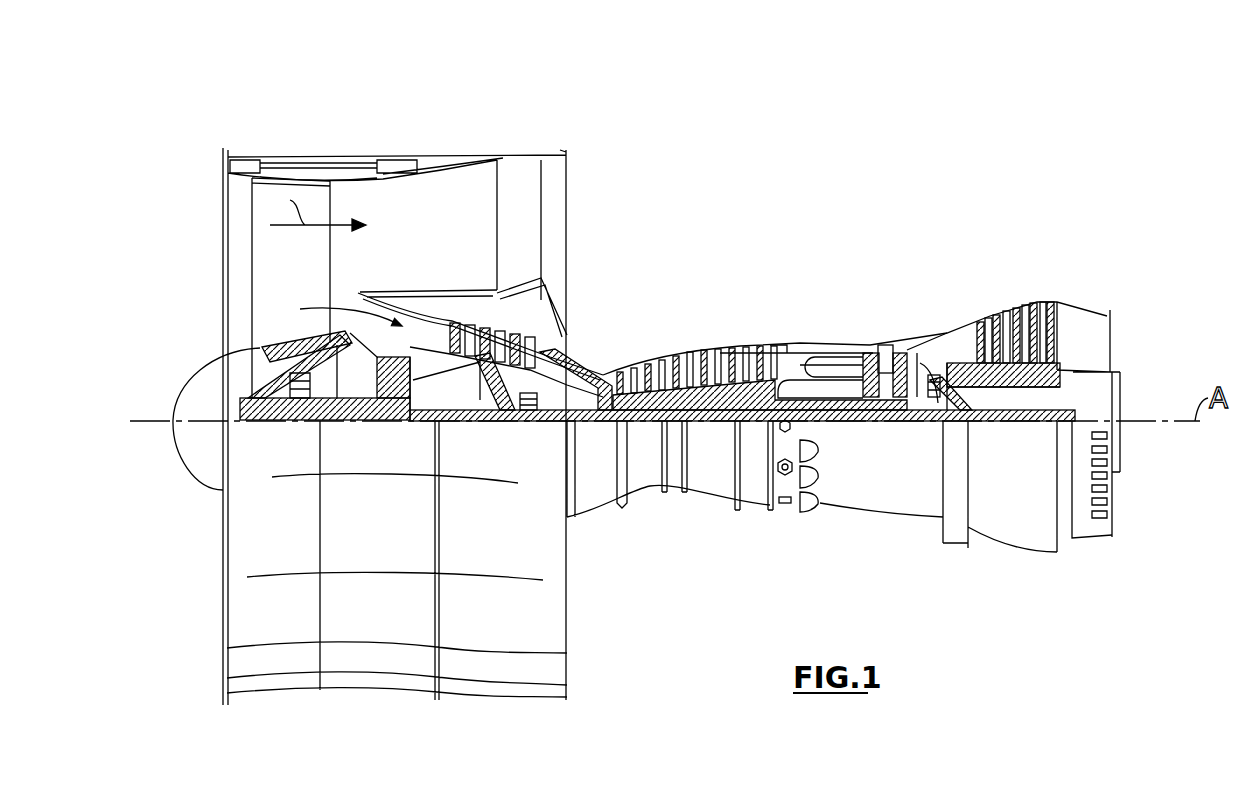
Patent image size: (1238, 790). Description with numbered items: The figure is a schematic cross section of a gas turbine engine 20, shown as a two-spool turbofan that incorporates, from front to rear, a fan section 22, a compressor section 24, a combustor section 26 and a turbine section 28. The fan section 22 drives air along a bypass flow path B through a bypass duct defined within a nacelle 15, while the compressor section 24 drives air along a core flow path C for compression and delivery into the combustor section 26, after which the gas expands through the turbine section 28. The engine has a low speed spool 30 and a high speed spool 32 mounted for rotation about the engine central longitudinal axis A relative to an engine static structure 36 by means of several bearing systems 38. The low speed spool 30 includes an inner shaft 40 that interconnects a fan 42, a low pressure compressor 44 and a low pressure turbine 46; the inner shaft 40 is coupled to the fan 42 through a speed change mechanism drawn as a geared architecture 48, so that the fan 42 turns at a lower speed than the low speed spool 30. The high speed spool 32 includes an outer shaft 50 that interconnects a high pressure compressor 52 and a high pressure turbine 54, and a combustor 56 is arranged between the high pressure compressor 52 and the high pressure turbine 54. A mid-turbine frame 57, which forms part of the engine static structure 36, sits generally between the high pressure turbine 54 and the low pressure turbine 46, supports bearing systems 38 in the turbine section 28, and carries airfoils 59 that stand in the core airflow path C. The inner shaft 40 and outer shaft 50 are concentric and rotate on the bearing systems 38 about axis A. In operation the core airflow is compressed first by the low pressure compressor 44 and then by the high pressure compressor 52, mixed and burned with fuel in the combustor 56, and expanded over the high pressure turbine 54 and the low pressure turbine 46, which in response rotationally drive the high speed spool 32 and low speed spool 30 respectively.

The nacelle 15 is at (398, 159).
The gas turbine engine 20 is at (829, 203).
The fan section 22 is at (331, 146).
The compressor section 24 is at (618, 333).
The combustor section 26 is at (823, 327).
The turbine section 28 is at (961, 289).
The low speed spool 30 is at (713, 435).
The high speed spool 32 is at (754, 363).
The engine static structure 36 is at (752, 516).
The bearing systems 38 is at (525, 421).
The inner shaft 40 is at (583, 425).
The fan 42 is at (305, 278).
The low pressure compressor 44 is at (480, 345).
The low pressure turbine 46 is at (1003, 305).
The geared architecture 48 is at (400, 421).
The outer shaft 50 is at (830, 421).
The high pressure compressor 52 is at (692, 355).
The high pressure turbine 54 is at (886, 345).
The combustor 56 is at (822, 370).
The mid-turbine frame 57 is at (927, 334).
The airfoils 59 is at (938, 378).